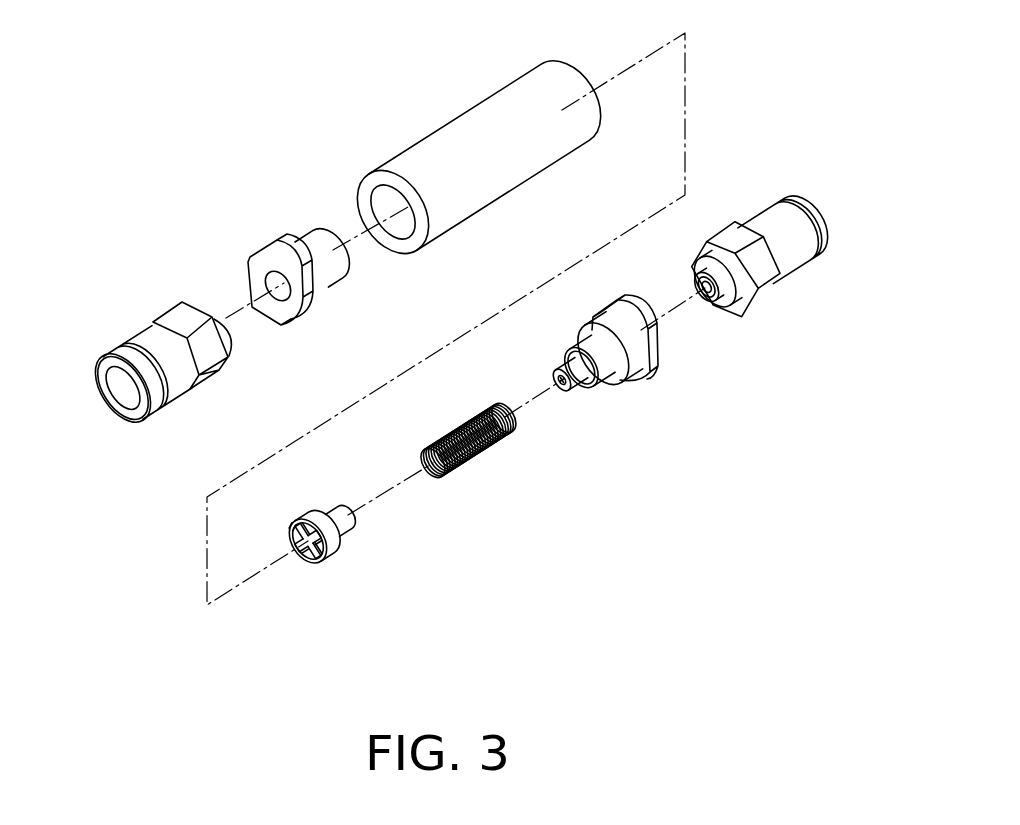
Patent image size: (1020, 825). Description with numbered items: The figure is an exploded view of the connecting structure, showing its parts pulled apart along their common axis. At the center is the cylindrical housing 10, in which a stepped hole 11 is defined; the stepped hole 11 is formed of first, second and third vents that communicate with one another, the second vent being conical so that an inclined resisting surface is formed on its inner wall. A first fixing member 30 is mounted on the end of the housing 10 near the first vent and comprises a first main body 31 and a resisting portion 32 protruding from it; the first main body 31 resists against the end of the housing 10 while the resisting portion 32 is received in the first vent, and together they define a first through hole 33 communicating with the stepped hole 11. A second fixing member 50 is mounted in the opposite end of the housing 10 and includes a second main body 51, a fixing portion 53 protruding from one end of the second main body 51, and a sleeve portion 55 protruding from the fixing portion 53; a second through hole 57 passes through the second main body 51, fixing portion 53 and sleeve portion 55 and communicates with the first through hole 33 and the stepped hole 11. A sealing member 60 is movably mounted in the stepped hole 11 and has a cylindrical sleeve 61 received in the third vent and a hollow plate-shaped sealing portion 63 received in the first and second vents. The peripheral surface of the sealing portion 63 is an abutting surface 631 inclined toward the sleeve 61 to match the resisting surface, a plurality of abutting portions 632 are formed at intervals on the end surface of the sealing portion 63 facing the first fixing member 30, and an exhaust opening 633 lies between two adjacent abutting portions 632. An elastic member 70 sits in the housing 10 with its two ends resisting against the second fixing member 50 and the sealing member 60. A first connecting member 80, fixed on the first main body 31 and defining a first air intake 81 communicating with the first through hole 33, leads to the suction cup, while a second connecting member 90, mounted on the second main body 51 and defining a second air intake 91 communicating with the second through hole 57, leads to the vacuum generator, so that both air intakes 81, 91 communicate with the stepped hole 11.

The housing 10 is at (451, 157).
The stepped hole 11 is at (380, 195).
The first fixing member 30 is at (280, 279).
The first main body 31 is at (273, 243).
The resisting portion 32 is at (310, 240).
The first through hole 33 is at (283, 296).
The second fixing member 50 is at (636, 378).
The second main body 51 is at (657, 340).
The fixing portion 53 is at (614, 369).
The sleeve portion 55 is at (583, 383).
The second through hole 57 is at (564, 391).
The sealing member 60 is at (331, 555).
The sleeve 61 is at (349, 525).
The sealing portion 63 is at (333, 549).
The abutting surface 631 is at (318, 520).
The abutting portions 632 is at (311, 568).
The exhaust opening 633 is at (286, 526).
The elastic member 70 is at (473, 457).
The first connecting member 80 is at (142, 369).
The first air intake 81 is at (121, 393).
The second connecting member 90 is at (744, 253).
The second air intake 91 is at (700, 284).